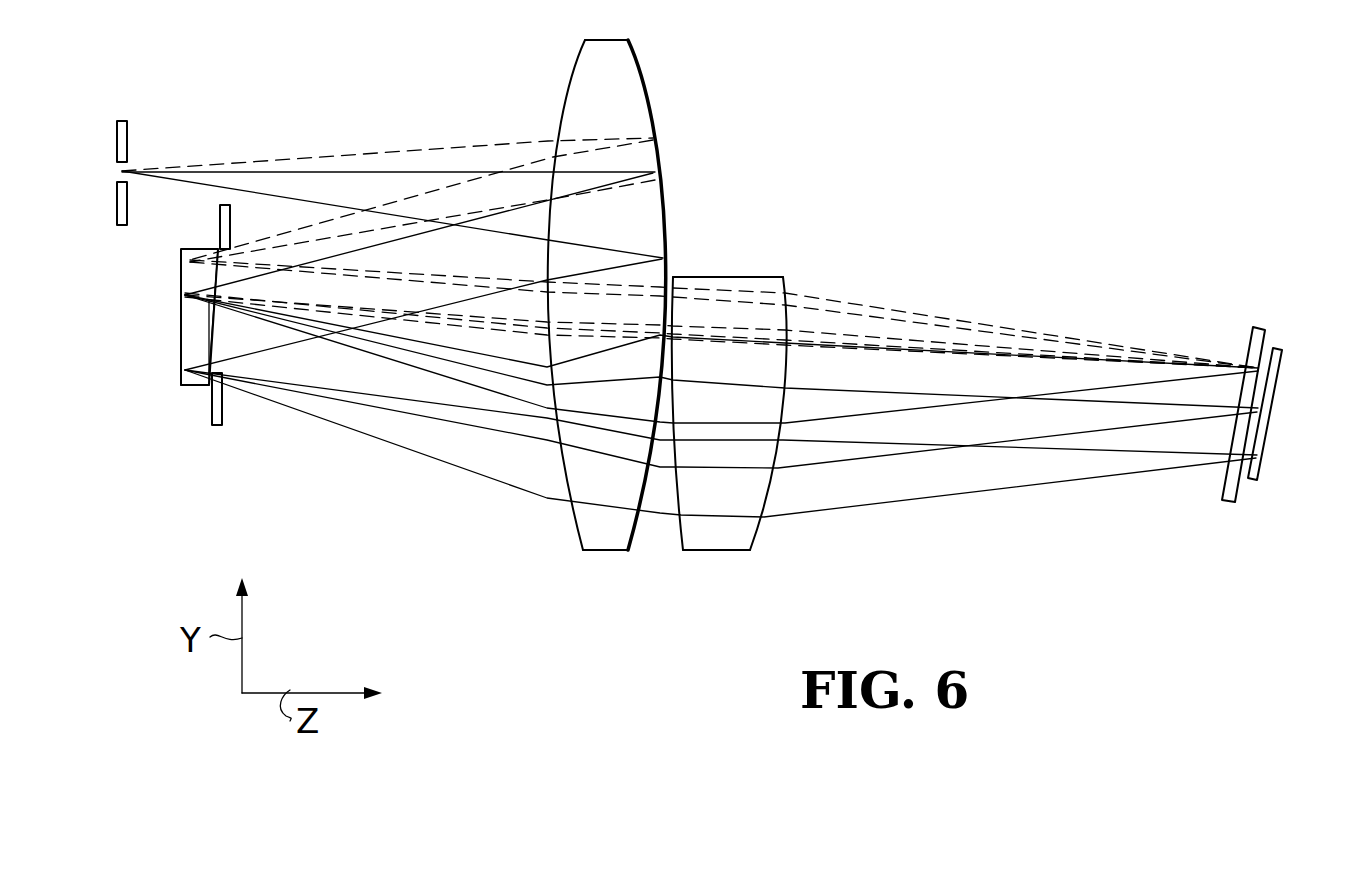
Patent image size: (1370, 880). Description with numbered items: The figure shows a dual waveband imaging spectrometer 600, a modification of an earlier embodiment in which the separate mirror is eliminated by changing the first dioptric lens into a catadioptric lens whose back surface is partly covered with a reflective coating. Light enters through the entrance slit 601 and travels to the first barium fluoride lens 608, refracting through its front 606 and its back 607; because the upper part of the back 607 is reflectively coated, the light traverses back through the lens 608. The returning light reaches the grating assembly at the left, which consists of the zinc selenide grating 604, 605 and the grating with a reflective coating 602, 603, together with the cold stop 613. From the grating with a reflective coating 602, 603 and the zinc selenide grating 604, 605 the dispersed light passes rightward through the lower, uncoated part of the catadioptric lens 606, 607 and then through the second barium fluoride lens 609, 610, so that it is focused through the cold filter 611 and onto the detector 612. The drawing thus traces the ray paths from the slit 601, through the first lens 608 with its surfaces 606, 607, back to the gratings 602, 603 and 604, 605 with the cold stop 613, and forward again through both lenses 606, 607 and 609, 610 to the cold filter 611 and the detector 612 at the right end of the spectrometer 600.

The dual waveband imaging spectrometer 600 is at (866, 100).
The entrance slit 601 is at (127, 141).
The grating with a reflective coating 602 is at (181, 278).
The grating with a reflective coating 603 is at (212, 300).
The zinc selenide grating 604 is at (181, 352).
The zinc selenide grating 605 is at (207, 348).
The front of the first barium fluoride dioptric lens 606 is at (576, 78).
The back of the first barium fluoride dioptric lens 607 is at (649, 97).
The first lens 608 is at (614, 333).
The second barium fluoride lens 609 is at (680, 535).
The second barium fluoride lens 610 is at (757, 532).
The cold filter 611 is at (1251, 335).
The detector array 612 is at (1263, 465).
The cold stop 613 is at (212, 415).